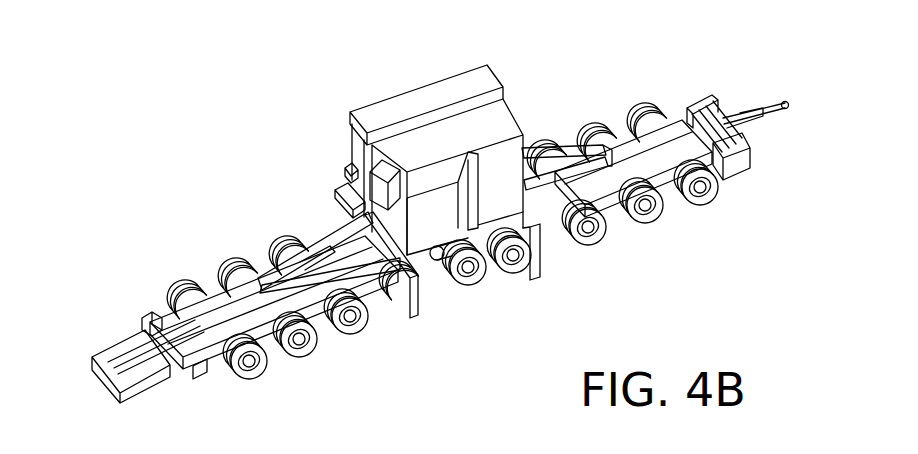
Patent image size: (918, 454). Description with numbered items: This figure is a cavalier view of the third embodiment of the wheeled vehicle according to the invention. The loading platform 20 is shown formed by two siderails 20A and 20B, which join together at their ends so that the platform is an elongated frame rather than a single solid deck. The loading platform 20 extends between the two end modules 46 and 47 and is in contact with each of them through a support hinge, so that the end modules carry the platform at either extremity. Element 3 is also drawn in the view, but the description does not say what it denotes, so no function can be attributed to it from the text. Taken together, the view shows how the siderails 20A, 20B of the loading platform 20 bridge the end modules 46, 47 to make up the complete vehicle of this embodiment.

The truck / tractor 3 is at (482, 120).
The loading platform 20 is at (435, 224).
The siderail 20A is at (568, 142).
The siderail 20B is at (358, 277).
The end module 46 is at (212, 237).
The end module 47 is at (664, 248).